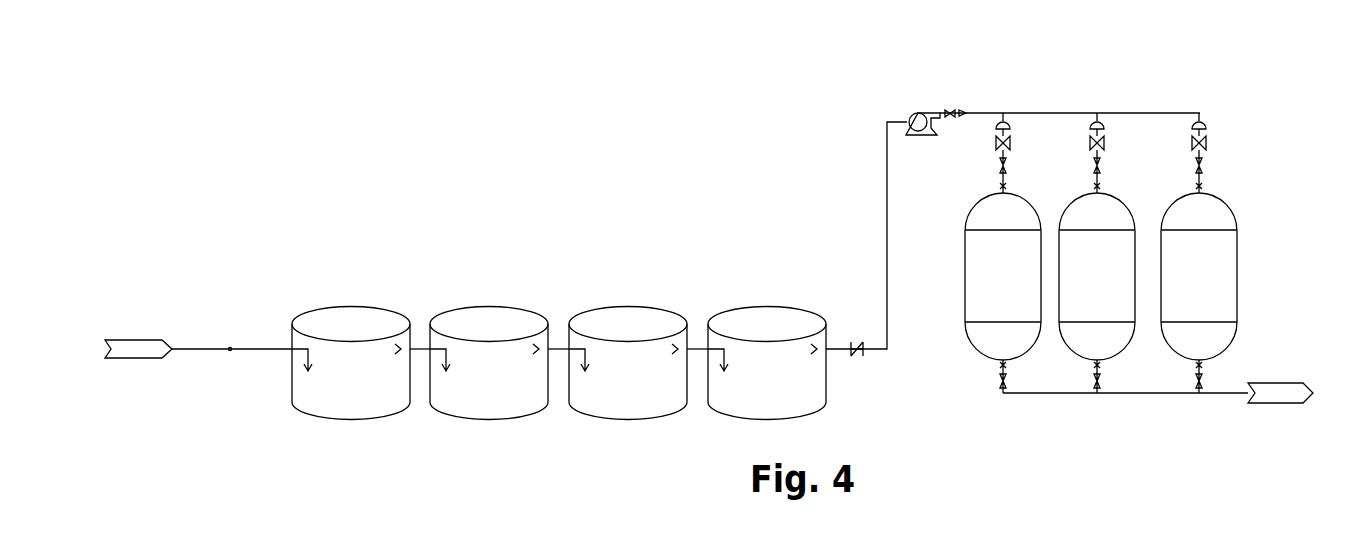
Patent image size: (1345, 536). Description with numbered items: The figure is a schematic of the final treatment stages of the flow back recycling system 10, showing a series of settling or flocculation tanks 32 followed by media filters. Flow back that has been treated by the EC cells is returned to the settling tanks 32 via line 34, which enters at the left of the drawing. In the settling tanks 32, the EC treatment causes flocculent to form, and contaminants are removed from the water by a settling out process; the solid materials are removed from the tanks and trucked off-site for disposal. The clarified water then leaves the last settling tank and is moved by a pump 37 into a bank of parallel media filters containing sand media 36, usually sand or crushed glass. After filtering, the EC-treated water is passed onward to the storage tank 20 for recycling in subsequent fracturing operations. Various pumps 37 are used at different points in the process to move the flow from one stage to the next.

The water treatment system 10 is at (1266, 146).
The storage tank 20 is at (1278, 401).
The settling tanks 32 is at (460, 296).
The line 34 is at (137, 340).
The sand media 36 is at (1271, 286).
The pumps 37 is at (912, 119).